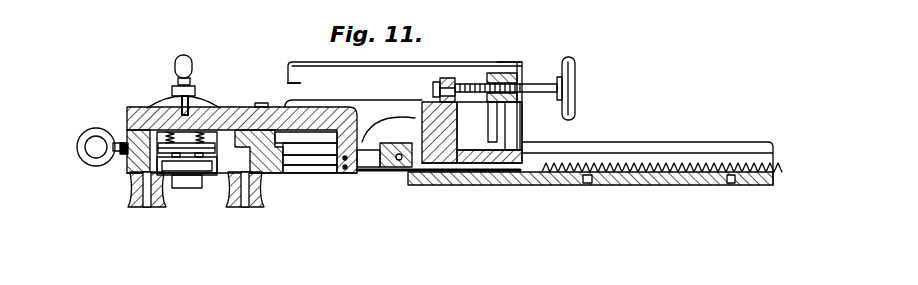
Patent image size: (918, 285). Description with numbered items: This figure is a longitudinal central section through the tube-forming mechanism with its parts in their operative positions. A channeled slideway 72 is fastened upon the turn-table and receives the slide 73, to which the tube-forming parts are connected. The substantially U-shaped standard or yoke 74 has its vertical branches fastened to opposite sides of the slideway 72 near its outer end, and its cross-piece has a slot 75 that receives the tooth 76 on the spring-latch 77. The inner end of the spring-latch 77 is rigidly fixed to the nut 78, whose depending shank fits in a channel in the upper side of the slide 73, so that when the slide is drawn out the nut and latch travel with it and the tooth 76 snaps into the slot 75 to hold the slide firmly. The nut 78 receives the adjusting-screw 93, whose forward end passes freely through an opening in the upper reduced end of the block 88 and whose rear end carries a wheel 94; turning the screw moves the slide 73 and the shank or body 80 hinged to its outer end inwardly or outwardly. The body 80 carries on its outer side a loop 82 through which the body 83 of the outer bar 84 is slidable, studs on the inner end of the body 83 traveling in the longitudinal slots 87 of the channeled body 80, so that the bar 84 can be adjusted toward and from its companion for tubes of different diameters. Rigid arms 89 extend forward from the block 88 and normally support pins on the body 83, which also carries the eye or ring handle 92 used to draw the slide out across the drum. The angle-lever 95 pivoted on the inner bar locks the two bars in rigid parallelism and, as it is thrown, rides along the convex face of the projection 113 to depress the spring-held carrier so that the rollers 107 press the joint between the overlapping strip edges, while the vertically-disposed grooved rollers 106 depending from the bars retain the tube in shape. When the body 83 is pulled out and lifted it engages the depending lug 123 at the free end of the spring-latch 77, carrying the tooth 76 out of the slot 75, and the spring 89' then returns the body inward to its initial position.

The slideway 72 is at (647, 183).
The slide 73 is at (513, 152).
The standard or yoke 74 is at (513, 127).
The slot 75 is at (507, 64).
The tooth 76 is at (468, 74).
The spring-latch 77 is at (387, 66).
The nut 78 is at (497, 107).
The shank or body 80 is at (298, 168).
The loop 82 is at (266, 100).
The body 83 is at (163, 117).
The bar 84 is at (137, 161).
The longitudinal slots 87 is at (317, 157).
The block 88 is at (422, 115).
The rigid arms 89 is at (431, 164).
The spring 89' is at (662, 142).
The handle 92 is at (84, 137).
The adjusting-screw 93 is at (535, 82).
The wheel 94 is at (576, 83).
The angle-lever 95 is at (194, 98).
The rollers 106 is at (130, 192).
The rollers 107 is at (182, 175).
The projection 113 is at (163, 105).
The depending lug 123 is at (313, 80).